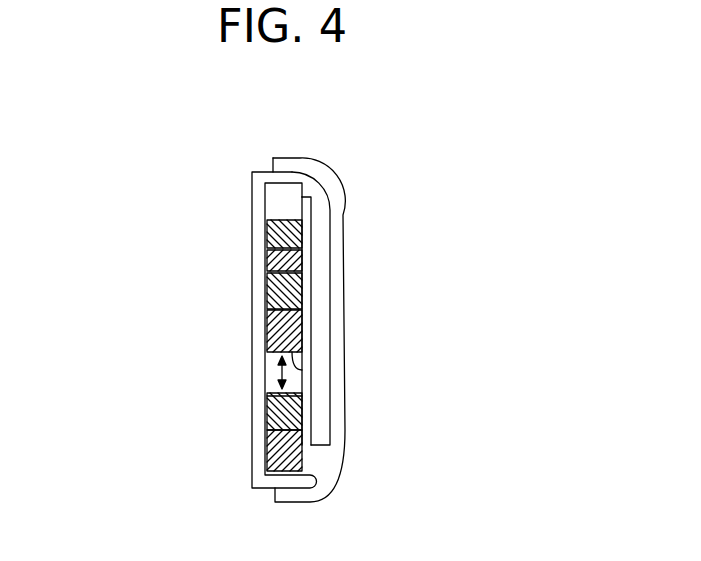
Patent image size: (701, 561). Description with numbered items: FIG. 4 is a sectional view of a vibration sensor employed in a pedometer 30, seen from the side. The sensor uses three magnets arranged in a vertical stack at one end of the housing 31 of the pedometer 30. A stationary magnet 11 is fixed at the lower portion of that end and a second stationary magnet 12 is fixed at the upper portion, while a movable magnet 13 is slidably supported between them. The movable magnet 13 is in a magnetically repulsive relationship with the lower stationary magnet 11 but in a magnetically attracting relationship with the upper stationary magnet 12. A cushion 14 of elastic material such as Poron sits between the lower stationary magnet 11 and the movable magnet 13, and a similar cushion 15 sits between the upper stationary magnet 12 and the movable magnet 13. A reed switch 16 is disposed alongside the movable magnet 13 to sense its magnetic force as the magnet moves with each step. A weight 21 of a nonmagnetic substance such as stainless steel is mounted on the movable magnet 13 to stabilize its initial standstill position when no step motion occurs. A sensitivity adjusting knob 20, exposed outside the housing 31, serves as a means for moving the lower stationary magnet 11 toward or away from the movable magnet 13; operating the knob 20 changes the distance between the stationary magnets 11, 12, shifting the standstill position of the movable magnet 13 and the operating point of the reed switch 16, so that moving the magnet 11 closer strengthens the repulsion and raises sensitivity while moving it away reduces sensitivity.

The stationary magnet 11 is at (270, 452).
The stationary magnet 12 is at (270, 230).
The movable magnet 13 is at (270, 330).
The cushion 14 is at (270, 423).
The cushion 15 is at (270, 260).
The reed switch 16 is at (305, 337).
The sensitivity adjusting knob 20 is at (318, 465).
The weight 21 is at (270, 288).
The pedometer 30 is at (345, 395).
The housing 31 is at (332, 188).